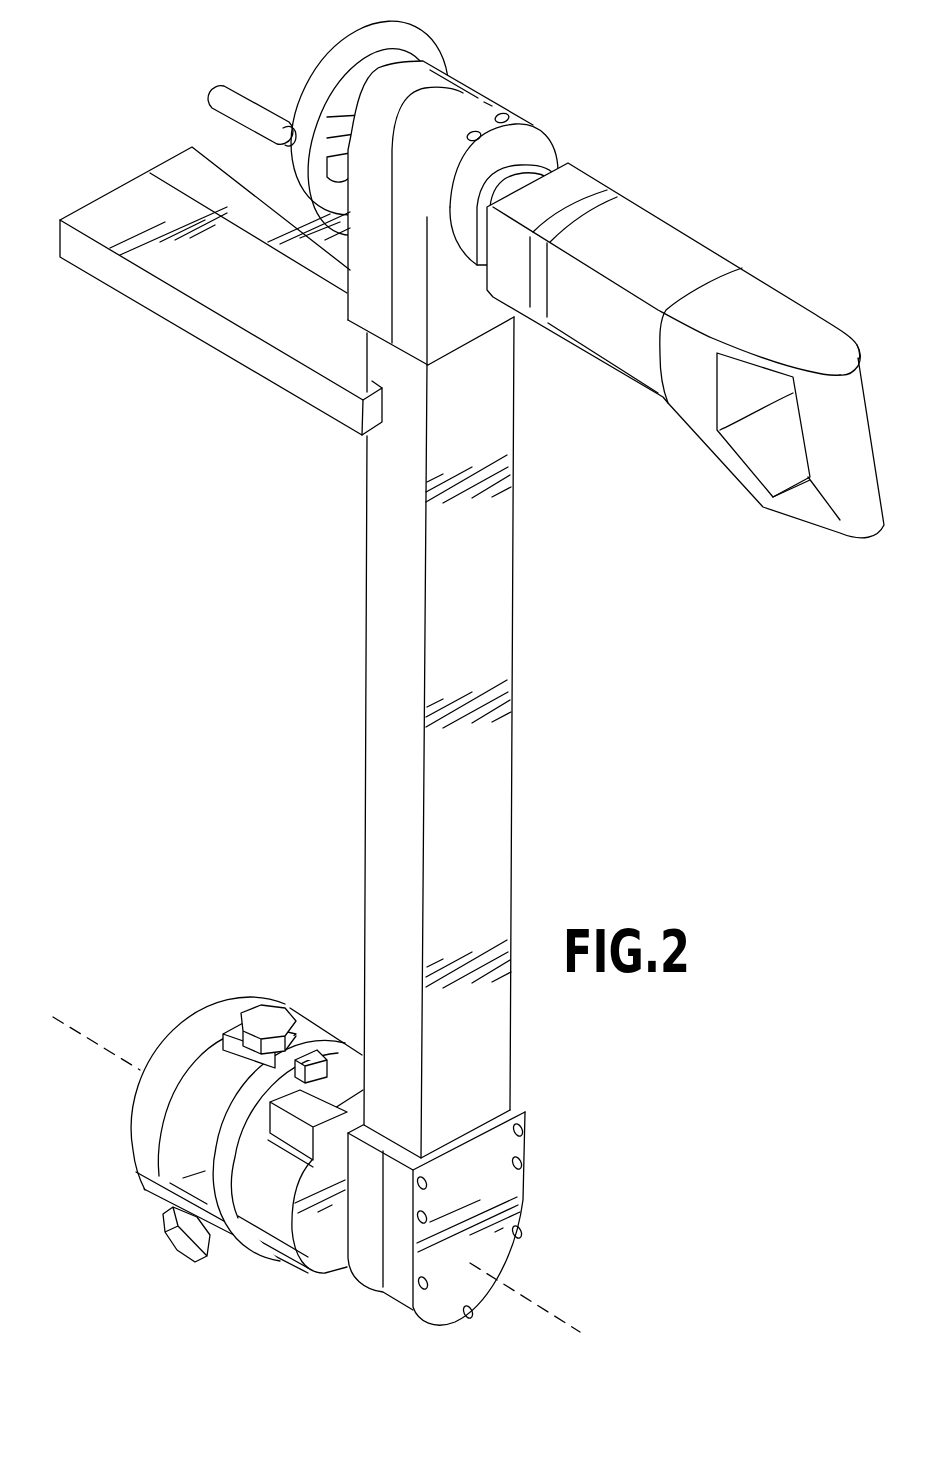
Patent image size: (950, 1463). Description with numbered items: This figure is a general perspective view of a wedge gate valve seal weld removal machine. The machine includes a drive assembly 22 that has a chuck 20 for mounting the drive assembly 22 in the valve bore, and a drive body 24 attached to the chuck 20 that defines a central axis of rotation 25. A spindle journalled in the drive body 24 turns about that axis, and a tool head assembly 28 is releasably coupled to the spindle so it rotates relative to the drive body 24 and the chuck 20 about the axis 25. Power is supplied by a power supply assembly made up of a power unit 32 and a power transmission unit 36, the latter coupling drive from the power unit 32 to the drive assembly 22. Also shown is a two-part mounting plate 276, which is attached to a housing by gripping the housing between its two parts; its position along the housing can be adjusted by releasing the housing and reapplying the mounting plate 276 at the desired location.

The chuck 20 is at (173, 1158).
The drive assembly 22 is at (320, 1153).
The drive body 24 is at (143, 1102).
The central axis of rotation 25 is at (560, 1317).
The tool head assembly 28 is at (236, 1181).
The power unit 32 is at (693, 237).
The power transmission unit 36 is at (366, 597).
The two-part mounting plate 276 is at (181, 324).